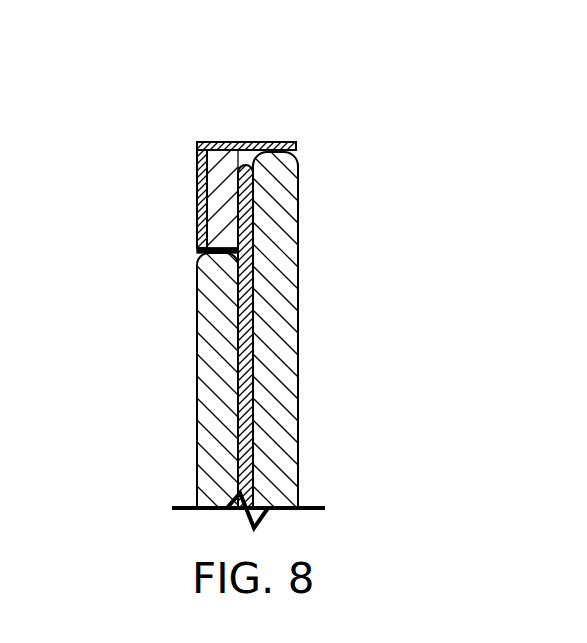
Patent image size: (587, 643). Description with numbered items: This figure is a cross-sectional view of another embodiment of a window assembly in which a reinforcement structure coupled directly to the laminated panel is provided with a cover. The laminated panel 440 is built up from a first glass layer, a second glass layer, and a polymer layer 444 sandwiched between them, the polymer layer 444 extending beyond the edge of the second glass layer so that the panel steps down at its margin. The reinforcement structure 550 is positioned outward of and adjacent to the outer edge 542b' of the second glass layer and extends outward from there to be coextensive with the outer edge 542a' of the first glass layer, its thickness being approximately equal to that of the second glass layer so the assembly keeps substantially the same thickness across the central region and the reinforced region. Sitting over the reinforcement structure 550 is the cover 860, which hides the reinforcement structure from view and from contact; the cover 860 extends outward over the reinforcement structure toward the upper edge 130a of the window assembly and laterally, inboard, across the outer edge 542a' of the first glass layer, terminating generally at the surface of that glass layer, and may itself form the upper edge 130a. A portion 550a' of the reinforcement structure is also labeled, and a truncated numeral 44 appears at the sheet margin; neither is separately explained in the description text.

The upper edge 130a is at (257, 142).
The cover 860 is at (222, 142).
The reinforcement structure 550 is at (197, 172).
The bracket inner portion 550a' is at (165, 199).
The outer edge of the first glass layer 542a' is at (330, 330).
The outer edge of the second glass layer 542b' is at (165, 380).
The polymer layer 444 is at (256, 375).
The laminated panel 440 is at (128, 377).
The partial reference 44 is at (11, 203).